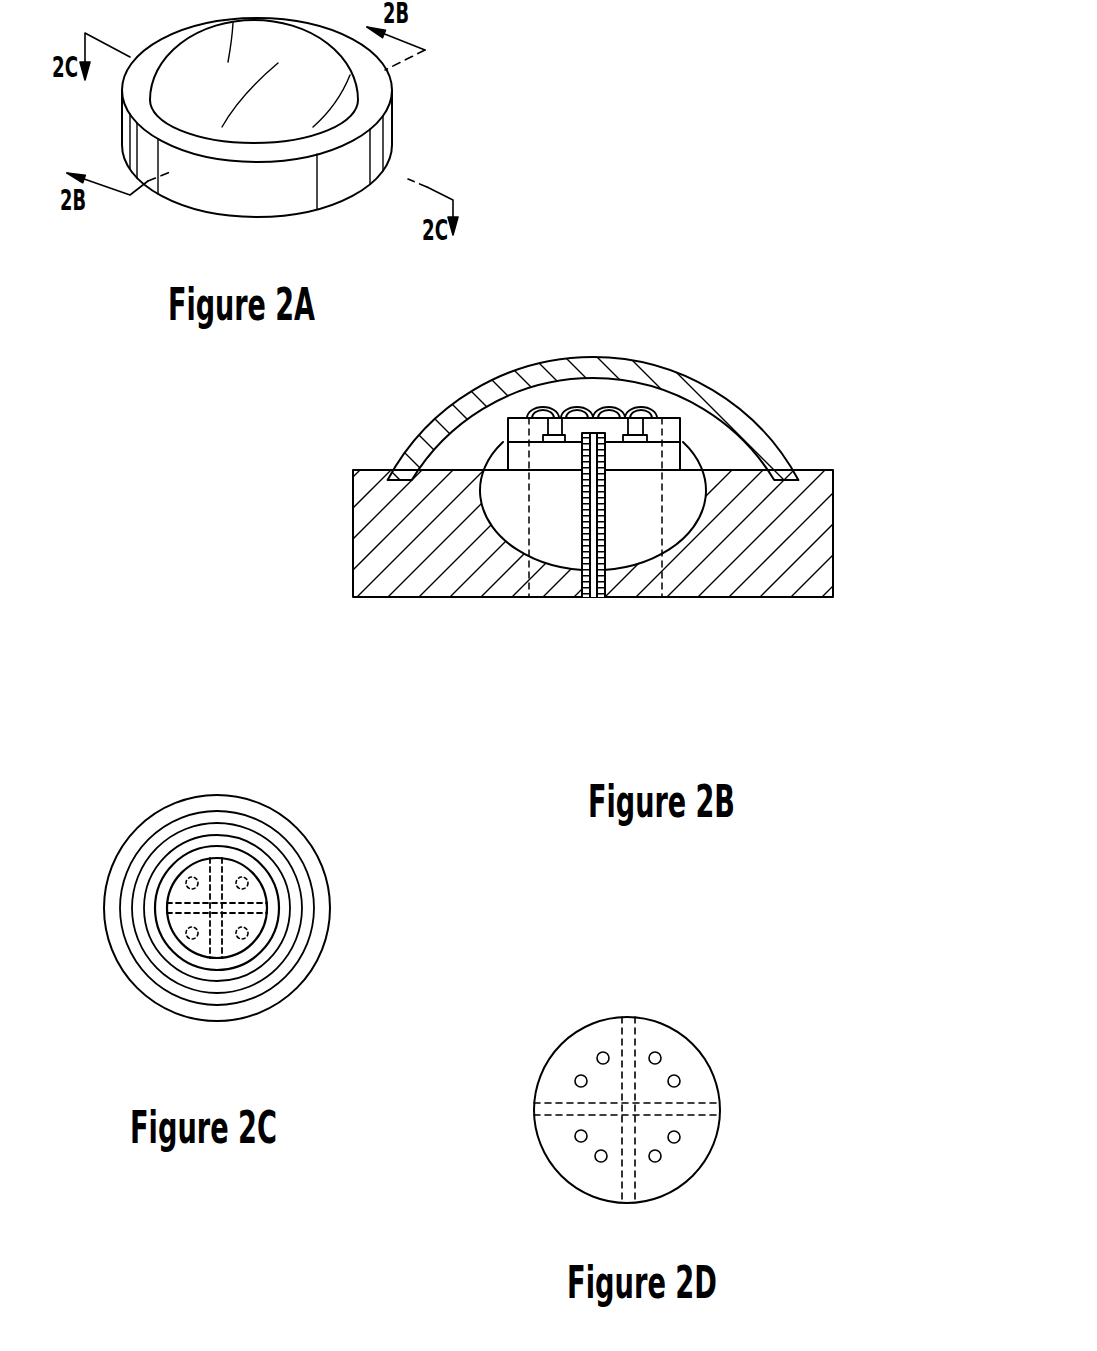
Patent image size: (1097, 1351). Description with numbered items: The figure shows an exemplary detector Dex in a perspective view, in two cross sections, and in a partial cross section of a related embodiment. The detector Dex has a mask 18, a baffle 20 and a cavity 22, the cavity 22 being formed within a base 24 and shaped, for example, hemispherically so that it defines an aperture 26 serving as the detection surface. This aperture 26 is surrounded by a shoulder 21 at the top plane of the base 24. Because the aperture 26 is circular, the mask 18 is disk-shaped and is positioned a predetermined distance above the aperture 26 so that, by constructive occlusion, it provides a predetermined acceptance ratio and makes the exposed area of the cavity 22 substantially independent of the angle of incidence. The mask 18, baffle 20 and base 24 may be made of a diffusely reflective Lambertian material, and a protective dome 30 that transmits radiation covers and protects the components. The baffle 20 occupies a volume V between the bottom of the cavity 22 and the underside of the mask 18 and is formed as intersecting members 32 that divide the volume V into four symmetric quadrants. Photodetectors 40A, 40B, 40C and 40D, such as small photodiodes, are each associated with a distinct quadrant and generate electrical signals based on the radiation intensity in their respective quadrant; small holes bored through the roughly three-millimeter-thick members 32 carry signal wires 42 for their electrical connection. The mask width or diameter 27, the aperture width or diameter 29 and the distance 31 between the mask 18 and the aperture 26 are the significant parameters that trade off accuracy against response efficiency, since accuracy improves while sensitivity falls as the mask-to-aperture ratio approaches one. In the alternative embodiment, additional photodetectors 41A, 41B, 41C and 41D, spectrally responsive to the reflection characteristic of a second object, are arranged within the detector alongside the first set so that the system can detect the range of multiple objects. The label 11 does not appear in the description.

In FIG. 2B, the light emitting device 11 is at (708, 447).
In FIG. 2B, the mask 18 is at (725, 380).
In FIG. 2D, the mask 18 is at (713, 1067).
In FIG. 2B, the baffle 20 is at (583, 527).
In FIG. 2C, the baffle 20 is at (213, 957).
In FIG. 2D, the baffle 20 is at (630, 1017).
In FIG. 2B, the shoulder 21 is at (428, 445).
In FIG. 2C, the shoulder 21 is at (293, 903).
In FIG. 2B, the cavity 22 is at (487, 483).
In FIG. 2C, the cavity 22 is at (258, 940).
In FIG. 2B, the base 24 is at (360, 522).
In FIG. 2C, the base 24 is at (217, 795).
In FIG. 2B, the aperture 26 is at (703, 466).
In FIG. 2C, the aperture 26 is at (270, 917).
In FIG. 2B, the width or diameter of the mask 27 is at (677, 671).
In FIG. 2B, the width or diameter of the aperture 29 is at (708, 714).
In FIG. 2B, the protective dome 30 is at (657, 373).
In FIG. 2C, the protective dome 30 is at (293, 847).
In FIG. 2B, the distance between the mask and the aperture 31 is at (903, 368).
In FIG. 2B, the intersecting members 32 is at (598, 587).
In FIG. 2C, the intersecting members 32 is at (255, 900).
In FIG. 2C, the photodetector 40A is at (180, 882).
In FIG. 2D, the photodetector 40A is at (575, 1077).
In FIG. 2C, the photodetector 40B is at (258, 868).
In FIG. 2D, the photodetector 40B is at (660, 1056).
In FIG. 2C, the photodetector 40C is at (256, 957).
In FIG. 2D, the photodetector 40C is at (681, 1138).
In FIG. 2C, the photodetector 40D is at (180, 945).
In FIG. 2D, the photodetector 40D is at (595, 1160).
In FIG. 2D, the photodetector 41A is at (602, 1052).
In FIG. 2D, the photodetector 41B is at (680, 1082).
In FIG. 2D, the photodetector 41C is at (662, 1163).
In FIG. 2D, the photodetector 41D is at (573, 1138).
In FIG. 2B, the signal wires 42 is at (580, 416).
In FIG. 2B, the volume V is at (533, 472).
In FIG. 2A, the detector Dex is at (221, 200).
In FIG. 2B, the detector Dex is at (561, 300).
In FIG. 2C, the detector Dex is at (113, 830).